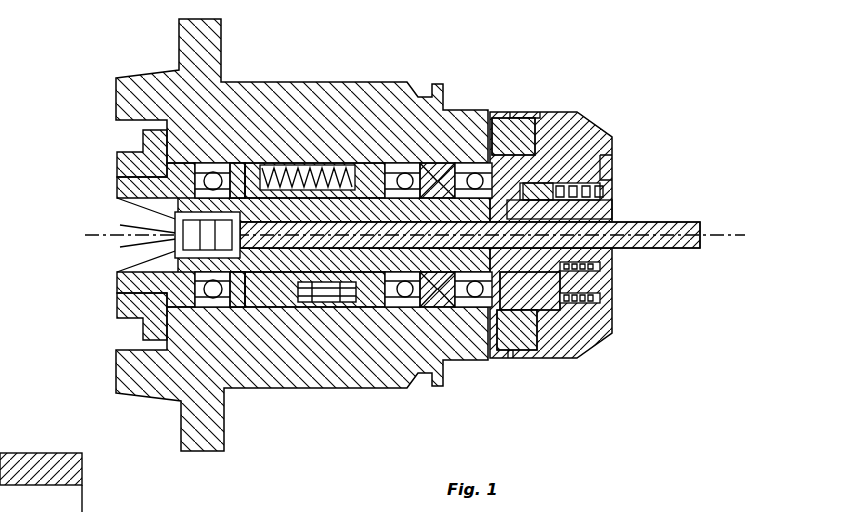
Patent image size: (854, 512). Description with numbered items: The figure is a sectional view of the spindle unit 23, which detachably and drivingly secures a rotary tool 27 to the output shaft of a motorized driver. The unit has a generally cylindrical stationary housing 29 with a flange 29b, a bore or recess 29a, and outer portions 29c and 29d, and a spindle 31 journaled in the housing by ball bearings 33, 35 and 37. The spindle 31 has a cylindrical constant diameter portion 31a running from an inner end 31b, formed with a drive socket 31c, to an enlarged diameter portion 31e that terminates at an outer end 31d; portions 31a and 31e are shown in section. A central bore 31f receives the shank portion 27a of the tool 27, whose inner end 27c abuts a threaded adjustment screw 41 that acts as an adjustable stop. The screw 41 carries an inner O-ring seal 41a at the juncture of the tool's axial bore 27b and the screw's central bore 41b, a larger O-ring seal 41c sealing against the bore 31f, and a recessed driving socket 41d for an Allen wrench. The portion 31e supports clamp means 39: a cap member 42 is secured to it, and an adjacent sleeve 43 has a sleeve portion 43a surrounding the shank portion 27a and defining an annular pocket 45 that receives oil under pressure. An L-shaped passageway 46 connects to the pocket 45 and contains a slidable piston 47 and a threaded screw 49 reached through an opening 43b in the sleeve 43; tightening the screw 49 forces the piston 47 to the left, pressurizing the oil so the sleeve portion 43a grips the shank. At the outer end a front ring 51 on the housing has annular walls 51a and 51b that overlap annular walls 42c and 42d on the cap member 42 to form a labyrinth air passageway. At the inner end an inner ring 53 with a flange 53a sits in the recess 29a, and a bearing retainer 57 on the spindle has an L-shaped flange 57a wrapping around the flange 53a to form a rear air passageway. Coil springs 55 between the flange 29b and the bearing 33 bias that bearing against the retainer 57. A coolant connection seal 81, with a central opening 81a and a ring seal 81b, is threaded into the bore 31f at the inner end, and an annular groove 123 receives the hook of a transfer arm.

The spindle unit 23 is at (435, 25).
The rotary tool 27 is at (684, 218).
The shank portion 27a is at (500, 312).
The axial bore 27b is at (700, 247).
The inner end 27c is at (495, 200).
The stationary housing 29 is at (312, 390).
The bore or recess 29a is at (243, 396).
The flange 29b is at (346, 175).
The housing flange 29c is at (150, 78).
The housing flange 29d is at (222, 30).
The spindle 31 is at (612, 275).
The cylindrical constant diameter portion 31a is at (360, 390).
The inner end 31b is at (125, 205).
The drive socket 31c is at (118, 220).
The outer end 31d is at (612, 170).
The enlarged diameter portion 31e is at (610, 132).
The central bore 31f is at (250, 300).
The ball bearing 33 is at (216, 164).
The ball bearing 35 is at (382, 125).
The ball bearing 37 is at (483, 110).
The clamp means 39 is at (625, 252).
The threaded adjustment screw 41 is at (322, 312).
The inner O-ring seal 41a is at (470, 300).
The central bore 41b is at (296, 164).
The second O-ring seal 41c is at (340, 170).
The recessed driving socket 41d is at (222, 166).
The cap member 42 is at (595, 125).
The annular wall 42c is at (537, 360).
The annular wall 42d is at (487, 362).
The sleeve 43 is at (612, 288).
The sleeve portion 43a is at (612, 222).
The opening 43b is at (612, 195).
The annular enclosure or pocket 45 is at (600, 330).
The L-shaped passageway 46 is at (543, 125).
The slidable piston 47 is at (547, 125).
The threaded screw 49 is at (560, 130).
The front ring 51 is at (500, 115).
The annular wall 51a is at (575, 358).
The annular wall 51b is at (612, 352).
The inner ring 53 is at (140, 333).
The flange 53a is at (145, 298).
The coil spring 55 is at (302, 165).
The bearing retainer 57 is at (117, 172).
The flange 57a is at (145, 152).
The coolant connection seal 81 is at (165, 256).
The central opening 81a is at (165, 244).
The ring seal 81b is at (170, 237).
The annular groove 123 is at (432, 90).